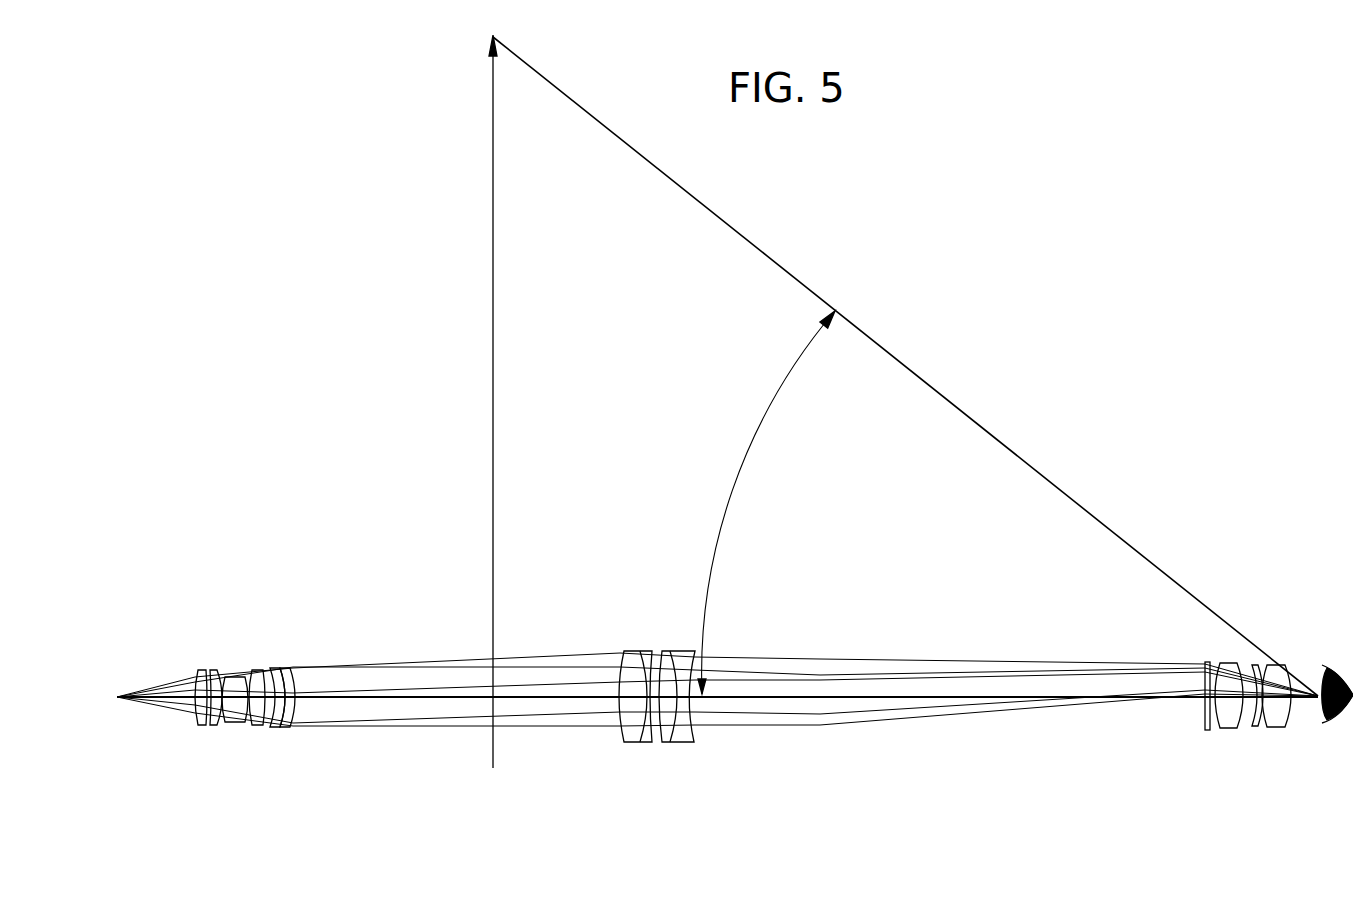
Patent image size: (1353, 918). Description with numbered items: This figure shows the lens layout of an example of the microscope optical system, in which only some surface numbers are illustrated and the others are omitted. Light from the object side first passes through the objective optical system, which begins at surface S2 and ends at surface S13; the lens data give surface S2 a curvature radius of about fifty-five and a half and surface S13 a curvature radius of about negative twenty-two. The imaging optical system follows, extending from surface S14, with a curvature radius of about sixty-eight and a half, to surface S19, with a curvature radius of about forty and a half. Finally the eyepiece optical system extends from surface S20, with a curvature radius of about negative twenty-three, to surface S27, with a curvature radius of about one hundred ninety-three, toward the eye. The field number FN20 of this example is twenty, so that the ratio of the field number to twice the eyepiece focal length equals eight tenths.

The surface number 2 S2 is at (195, 674).
The surface number 13 S13 is at (295, 682).
The surface number 14 S14 is at (620, 660).
The surface number 19 S19 is at (694, 731).
The field number FN20 is at (1208, 658).
The surface number 20 S20 is at (1207, 728).
The surface number 27 S27 is at (1295, 714).